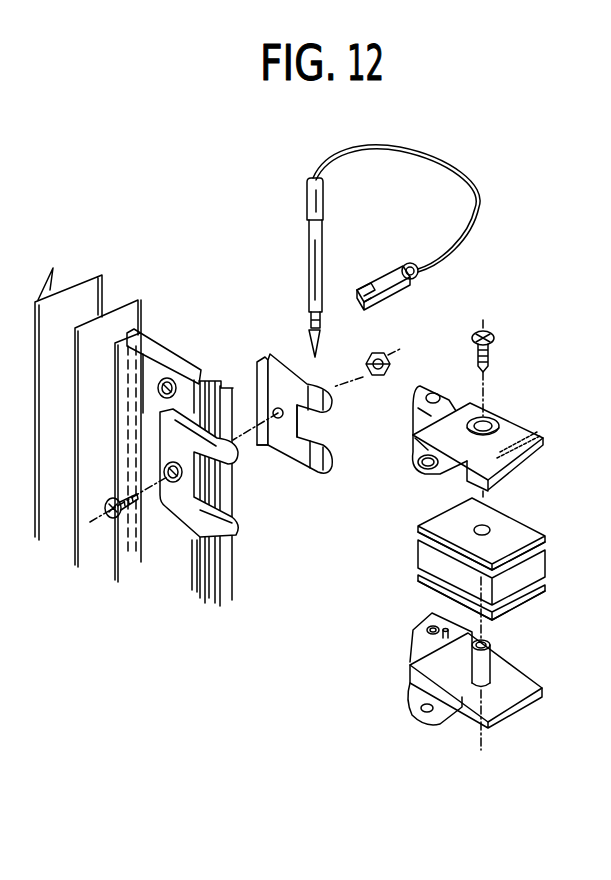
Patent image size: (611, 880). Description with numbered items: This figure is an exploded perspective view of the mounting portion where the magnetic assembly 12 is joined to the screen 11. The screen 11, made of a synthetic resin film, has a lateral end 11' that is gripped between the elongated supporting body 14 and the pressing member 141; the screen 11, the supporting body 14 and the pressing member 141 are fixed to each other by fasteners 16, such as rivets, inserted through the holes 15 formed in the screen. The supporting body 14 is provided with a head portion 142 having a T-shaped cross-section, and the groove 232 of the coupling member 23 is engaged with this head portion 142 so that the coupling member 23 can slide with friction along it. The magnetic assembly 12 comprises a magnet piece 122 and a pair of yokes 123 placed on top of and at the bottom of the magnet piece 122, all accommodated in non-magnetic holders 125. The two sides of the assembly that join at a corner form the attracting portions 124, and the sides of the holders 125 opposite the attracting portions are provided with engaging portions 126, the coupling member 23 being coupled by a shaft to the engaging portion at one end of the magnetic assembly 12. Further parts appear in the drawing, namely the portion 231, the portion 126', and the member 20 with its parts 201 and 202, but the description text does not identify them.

The screen 11 is at (88, 411).
The lateral end of the screen 11' is at (233, 457).
The magnetic assembly 12 is at (420, 565).
The magnet piece 122 is at (517, 567).
The yokes 123 is at (507, 528).
The attracting portions 124 is at (542, 533).
The non-magnetic holders 125 is at (525, 435).
The engaging portions 126 is at (409, 482).
The bracket lug hole 126' is at (419, 611).
The elongated supporting body 14 is at (150, 340).
The pressing member 141 is at (157, 367).
The head portion 142 is at (262, 360).
The holes 15 is at (158, 384).
The fasteners 16 is at (162, 399).
The probe pin 20 is at (312, 280).
The clip 201 is at (368, 287).
The cable 202 is at (473, 195).
The coupling member 23 is at (285, 463).
The hook 231 is at (306, 383).
The groove 232 is at (258, 445).